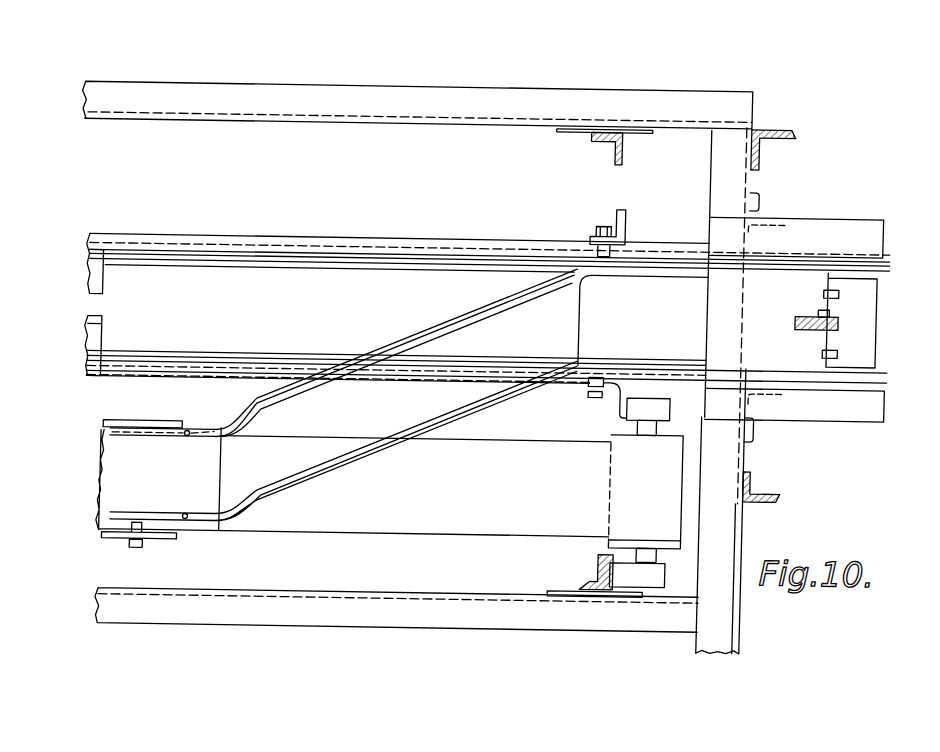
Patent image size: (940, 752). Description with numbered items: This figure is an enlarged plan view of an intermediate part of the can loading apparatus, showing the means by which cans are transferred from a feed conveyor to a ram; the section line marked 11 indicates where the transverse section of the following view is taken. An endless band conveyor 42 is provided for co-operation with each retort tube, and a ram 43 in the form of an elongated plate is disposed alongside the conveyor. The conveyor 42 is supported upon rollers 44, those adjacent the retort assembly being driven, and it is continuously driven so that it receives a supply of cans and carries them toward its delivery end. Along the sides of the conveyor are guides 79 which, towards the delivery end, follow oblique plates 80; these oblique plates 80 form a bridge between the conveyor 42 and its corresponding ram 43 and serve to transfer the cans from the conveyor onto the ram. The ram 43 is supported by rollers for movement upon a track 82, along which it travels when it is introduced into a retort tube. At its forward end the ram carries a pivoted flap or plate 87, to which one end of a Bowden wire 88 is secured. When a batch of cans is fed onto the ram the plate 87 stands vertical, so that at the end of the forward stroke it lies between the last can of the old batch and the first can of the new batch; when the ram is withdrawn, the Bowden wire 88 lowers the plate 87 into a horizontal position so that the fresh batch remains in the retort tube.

The section line 11- 11 is at (127, 650).
The endless band conveyor 42 is at (507, 520).
The ram 43 is at (655, 280).
The rollers 44 is at (677, 542).
The guides 79 is at (407, 347).
The oblique plates 80 is at (566, 307).
The track 82 is at (96, 326).
The pivoted flap or plate 87 is at (851, 279).
The Bowden wire 88 is at (814, 315).